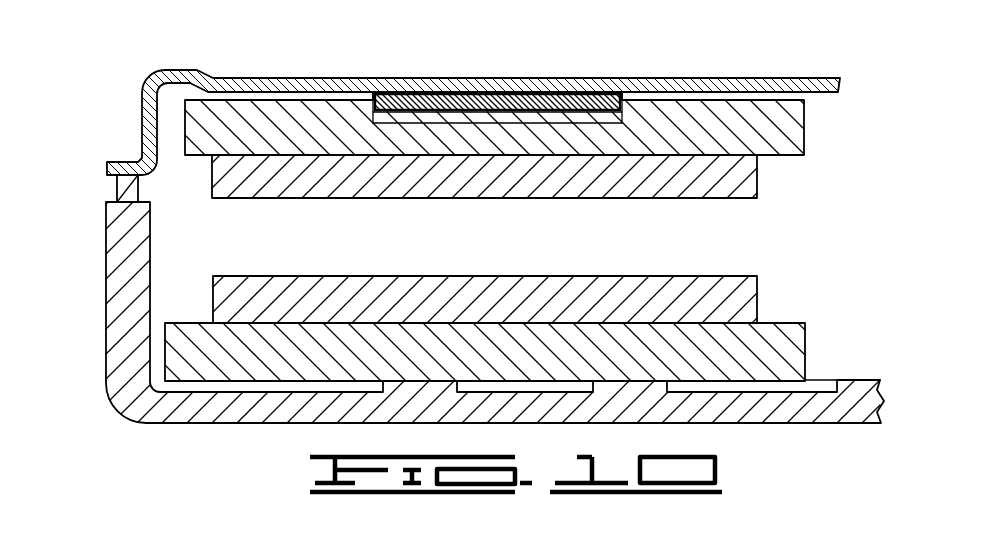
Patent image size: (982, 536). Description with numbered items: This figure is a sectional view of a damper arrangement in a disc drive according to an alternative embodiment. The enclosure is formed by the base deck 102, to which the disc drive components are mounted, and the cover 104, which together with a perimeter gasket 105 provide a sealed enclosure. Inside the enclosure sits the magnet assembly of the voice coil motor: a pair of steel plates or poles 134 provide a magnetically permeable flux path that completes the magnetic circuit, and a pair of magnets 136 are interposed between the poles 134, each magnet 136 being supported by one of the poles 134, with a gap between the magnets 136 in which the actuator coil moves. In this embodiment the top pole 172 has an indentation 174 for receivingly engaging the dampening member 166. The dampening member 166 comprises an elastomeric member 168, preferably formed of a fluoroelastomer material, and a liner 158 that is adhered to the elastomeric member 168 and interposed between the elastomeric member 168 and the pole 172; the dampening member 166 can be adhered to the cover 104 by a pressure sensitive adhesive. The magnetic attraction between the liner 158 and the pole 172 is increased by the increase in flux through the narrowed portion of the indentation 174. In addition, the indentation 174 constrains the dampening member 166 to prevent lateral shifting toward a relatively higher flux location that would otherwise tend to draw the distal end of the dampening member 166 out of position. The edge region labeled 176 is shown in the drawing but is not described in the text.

The base deck 102 is at (187, 424).
The cover 104 is at (203, 72).
The perimeter gasket 105 is at (115, 197).
The pole 134 is at (805, 343).
The magnet 136 is at (757, 180).
The liner 158 is at (393, 92).
The dampening member 166 is at (513, 90).
The elastomeric member 168 is at (553, 95).
The top pole 172 is at (805, 133).
The indentation 174 is at (476, 124).
The edge of recess 176 is at (625, 122).